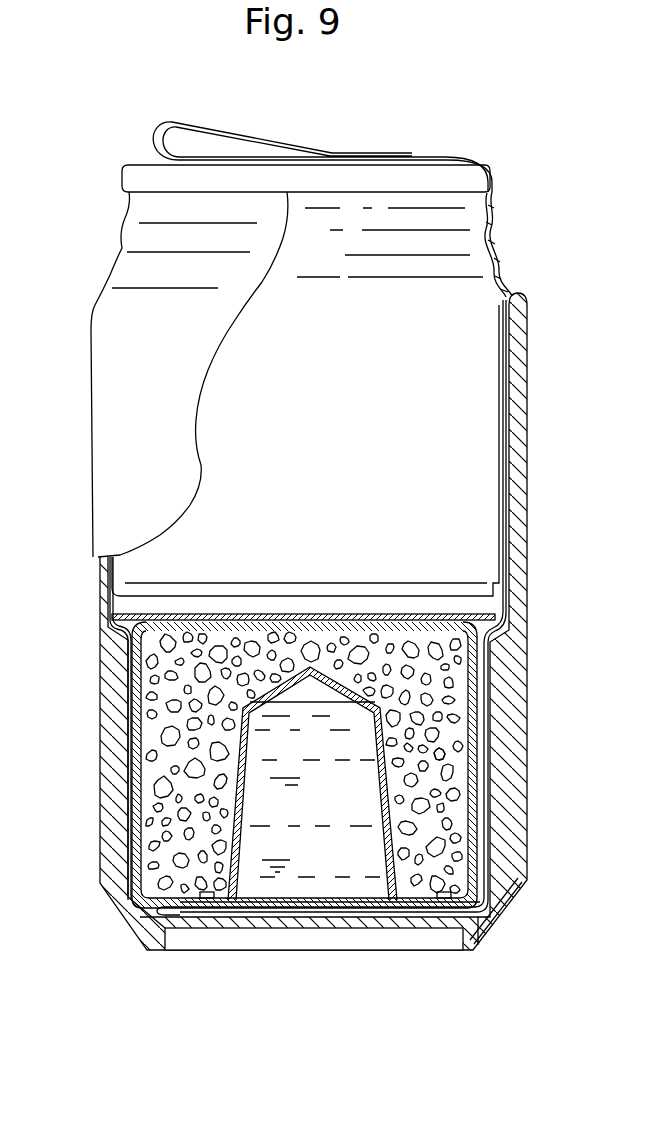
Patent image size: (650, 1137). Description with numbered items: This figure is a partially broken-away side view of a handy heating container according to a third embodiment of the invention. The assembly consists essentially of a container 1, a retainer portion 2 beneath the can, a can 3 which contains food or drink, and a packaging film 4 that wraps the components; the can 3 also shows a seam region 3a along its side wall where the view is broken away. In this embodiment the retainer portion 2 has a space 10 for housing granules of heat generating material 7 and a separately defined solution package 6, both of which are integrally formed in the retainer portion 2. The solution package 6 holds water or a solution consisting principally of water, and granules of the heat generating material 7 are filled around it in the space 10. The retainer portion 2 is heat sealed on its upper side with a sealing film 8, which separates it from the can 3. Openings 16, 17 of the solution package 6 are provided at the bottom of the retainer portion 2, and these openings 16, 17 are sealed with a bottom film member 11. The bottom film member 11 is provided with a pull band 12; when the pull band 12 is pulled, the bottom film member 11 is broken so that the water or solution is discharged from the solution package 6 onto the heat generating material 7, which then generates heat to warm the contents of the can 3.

The container 1 is at (512, 683).
The retainer portion 2 is at (140, 781).
The can 3 is at (470, 290).
The can seam 3a is at (483, 237).
The packaging film 4 is at (518, 533).
The solution package 6 is at (440, 853).
The heat generating material 7 is at (456, 752).
The sealing film 8 is at (246, 616).
The space 10 is at (373, 630).
The bottom film member 11 is at (288, 905).
The pull band 12 is at (342, 915).
The opening 16 is at (190, 912).
The opening 17 is at (245, 905).